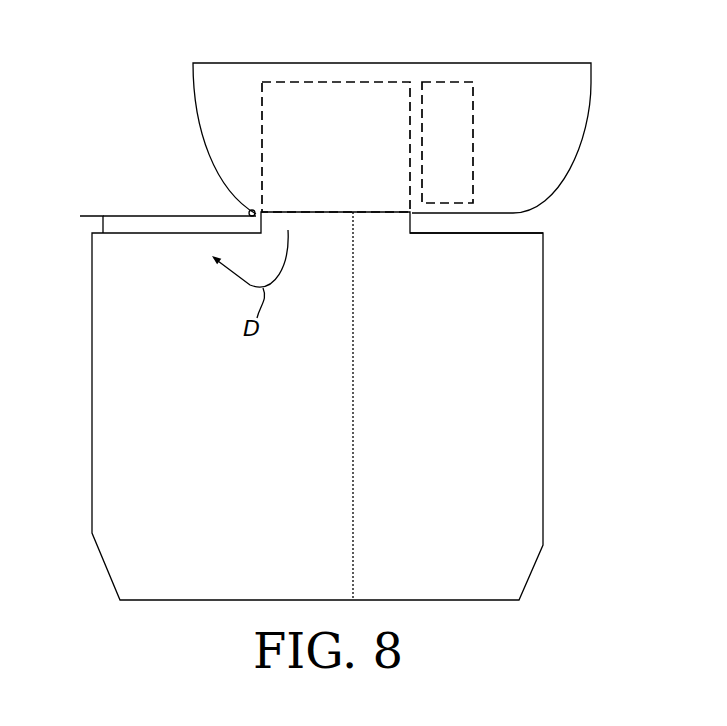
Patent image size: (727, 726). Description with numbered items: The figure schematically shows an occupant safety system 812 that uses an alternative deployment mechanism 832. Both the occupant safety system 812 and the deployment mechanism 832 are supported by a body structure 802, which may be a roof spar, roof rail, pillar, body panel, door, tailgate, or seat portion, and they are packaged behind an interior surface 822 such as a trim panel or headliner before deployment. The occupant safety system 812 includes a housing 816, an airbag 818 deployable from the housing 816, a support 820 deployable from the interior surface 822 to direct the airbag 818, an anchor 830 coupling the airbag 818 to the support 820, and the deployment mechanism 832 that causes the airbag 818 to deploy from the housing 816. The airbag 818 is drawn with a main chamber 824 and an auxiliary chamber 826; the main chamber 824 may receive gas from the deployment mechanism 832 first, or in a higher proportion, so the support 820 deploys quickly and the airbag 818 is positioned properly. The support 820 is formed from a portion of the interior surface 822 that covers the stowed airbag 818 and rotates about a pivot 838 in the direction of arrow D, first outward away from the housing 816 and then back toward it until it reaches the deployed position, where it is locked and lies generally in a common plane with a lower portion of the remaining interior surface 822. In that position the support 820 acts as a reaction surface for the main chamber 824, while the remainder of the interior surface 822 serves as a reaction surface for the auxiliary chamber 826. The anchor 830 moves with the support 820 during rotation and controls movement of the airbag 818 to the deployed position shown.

The body structure 802 is at (500, 63).
The occupant safety system 812 is at (148, 63).
The housing 816 is at (330, 82).
The airbag 818 is at (91, 477).
The support 820 is at (198, 215).
The interior surface 822 is at (582, 132).
The main chamber 824 is at (238, 493).
The auxiliary chamber 826 is at (488, 492).
The anchor 830 is at (102, 224).
The deployment mechanism 832 is at (474, 100).
The pivot 838 is at (252, 209).